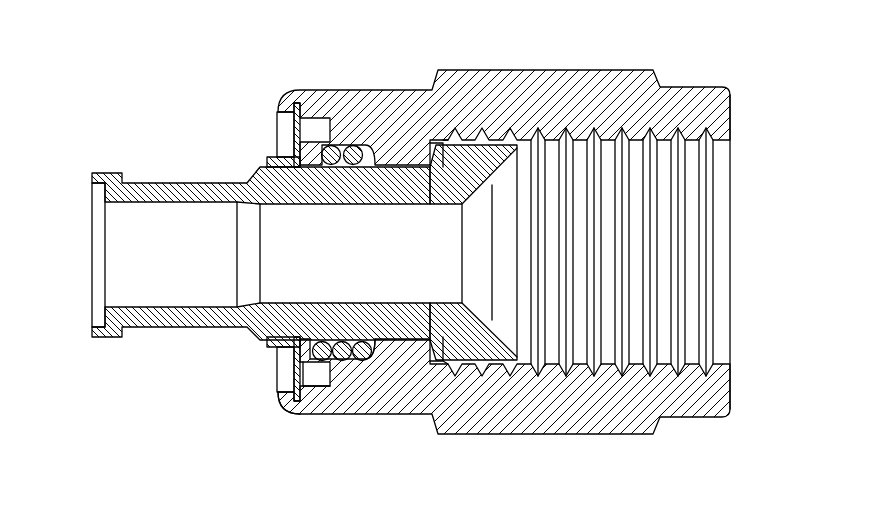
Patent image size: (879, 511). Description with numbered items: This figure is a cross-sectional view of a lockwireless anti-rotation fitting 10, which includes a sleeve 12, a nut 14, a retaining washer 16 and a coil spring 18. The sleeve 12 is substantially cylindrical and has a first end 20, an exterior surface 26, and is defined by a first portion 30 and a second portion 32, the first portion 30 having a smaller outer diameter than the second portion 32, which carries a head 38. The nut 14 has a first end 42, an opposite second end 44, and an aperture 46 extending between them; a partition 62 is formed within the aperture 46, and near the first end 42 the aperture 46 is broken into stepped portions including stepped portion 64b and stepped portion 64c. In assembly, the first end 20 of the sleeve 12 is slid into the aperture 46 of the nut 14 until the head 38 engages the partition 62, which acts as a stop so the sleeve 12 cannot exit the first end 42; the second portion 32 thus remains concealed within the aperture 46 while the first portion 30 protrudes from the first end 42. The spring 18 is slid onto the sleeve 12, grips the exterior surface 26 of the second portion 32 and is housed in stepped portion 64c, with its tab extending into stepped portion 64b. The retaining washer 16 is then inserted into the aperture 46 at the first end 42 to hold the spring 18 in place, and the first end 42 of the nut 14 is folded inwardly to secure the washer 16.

The lockwireless anti-rotation fitting 10 is at (102, 60).
The sleeve 12 is at (172, 297).
The nut 14 is at (582, 390).
The retaining washer 16 is at (292, 114).
The coil spring 18 is at (340, 364).
The first end 20 is at (90, 331).
The exterior surface 26 is at (296, 145).
The first portion 30 is at (124, 219).
The second portion 32 is at (432, 237).
The head 38 is at (432, 162).
The first end 42 is at (278, 393).
The second end 44 is at (736, 110).
The aperture 46 is at (692, 213).
The partition 62 is at (447, 152).
The stepped portion 64b is at (300, 362).
The stepped portion 64c is at (356, 364).